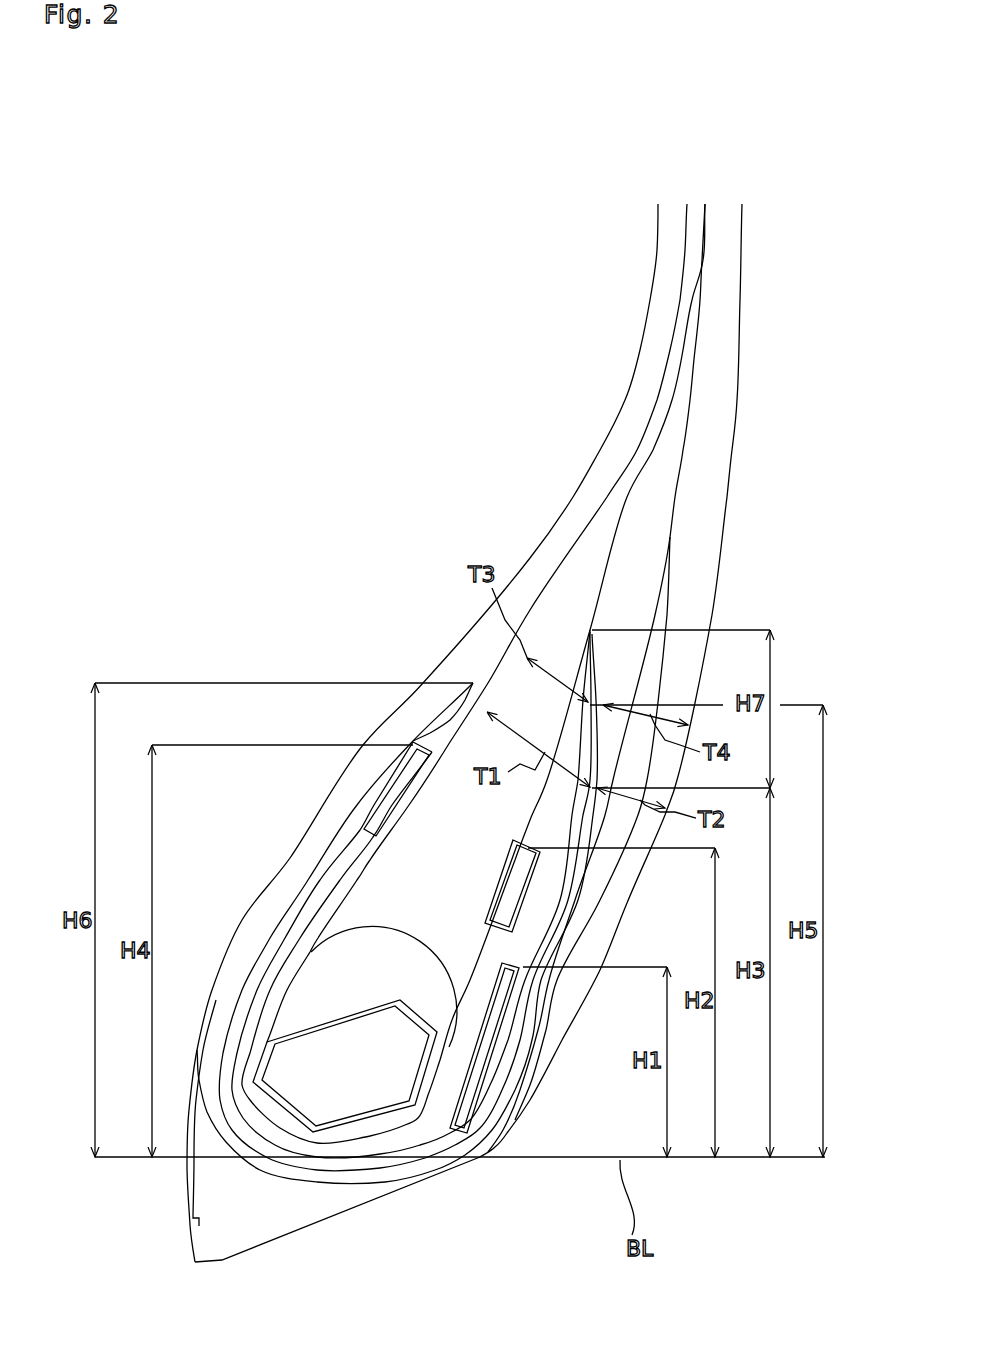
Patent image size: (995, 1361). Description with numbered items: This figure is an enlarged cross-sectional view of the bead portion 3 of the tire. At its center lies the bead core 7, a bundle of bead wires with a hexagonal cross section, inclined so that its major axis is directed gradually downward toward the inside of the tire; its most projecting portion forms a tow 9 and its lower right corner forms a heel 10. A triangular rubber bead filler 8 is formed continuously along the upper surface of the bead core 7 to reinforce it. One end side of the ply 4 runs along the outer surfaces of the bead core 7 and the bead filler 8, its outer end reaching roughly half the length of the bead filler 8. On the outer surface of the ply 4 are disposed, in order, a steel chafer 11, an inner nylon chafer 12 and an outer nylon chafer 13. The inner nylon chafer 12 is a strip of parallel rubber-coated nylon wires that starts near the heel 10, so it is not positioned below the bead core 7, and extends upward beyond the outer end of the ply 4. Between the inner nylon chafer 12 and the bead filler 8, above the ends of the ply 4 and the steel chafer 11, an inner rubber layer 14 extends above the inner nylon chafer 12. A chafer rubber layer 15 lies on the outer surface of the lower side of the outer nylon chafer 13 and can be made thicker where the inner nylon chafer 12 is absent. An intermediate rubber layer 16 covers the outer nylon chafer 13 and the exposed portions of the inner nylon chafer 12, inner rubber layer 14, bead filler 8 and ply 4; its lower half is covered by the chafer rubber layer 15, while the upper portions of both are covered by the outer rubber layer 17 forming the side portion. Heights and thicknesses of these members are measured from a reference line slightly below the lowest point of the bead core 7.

The bead portion 3 is at (762, 492).
The ply 4 is at (470, 645).
The bead core 7 is at (367, 1095).
The bead filler 8 is at (420, 860).
The tow 9 is at (258, 1082).
The heel 10 is at (420, 1107).
The steel chafer 11 is at (470, 1078).
The inner nylon chafer 12 is at (508, 1022).
The outer nylon chafer 13 is at (568, 910).
The inner rubber layer 14 is at (548, 812).
The chafer rubber layer 15 is at (300, 1213).
The intermediate rubber layer 16 is at (627, 547).
The outer rubber layer 17 is at (705, 555).